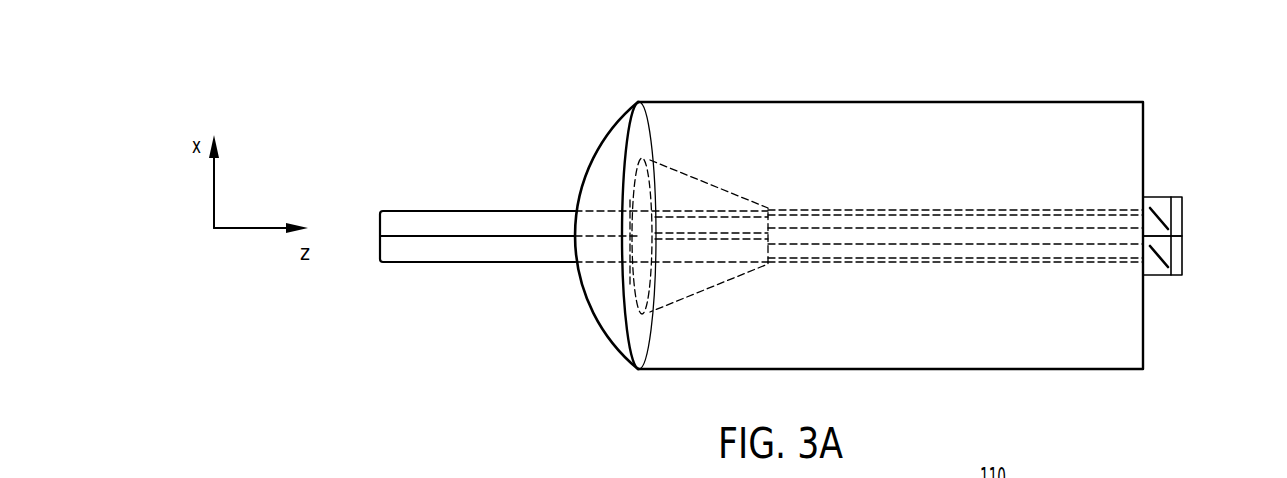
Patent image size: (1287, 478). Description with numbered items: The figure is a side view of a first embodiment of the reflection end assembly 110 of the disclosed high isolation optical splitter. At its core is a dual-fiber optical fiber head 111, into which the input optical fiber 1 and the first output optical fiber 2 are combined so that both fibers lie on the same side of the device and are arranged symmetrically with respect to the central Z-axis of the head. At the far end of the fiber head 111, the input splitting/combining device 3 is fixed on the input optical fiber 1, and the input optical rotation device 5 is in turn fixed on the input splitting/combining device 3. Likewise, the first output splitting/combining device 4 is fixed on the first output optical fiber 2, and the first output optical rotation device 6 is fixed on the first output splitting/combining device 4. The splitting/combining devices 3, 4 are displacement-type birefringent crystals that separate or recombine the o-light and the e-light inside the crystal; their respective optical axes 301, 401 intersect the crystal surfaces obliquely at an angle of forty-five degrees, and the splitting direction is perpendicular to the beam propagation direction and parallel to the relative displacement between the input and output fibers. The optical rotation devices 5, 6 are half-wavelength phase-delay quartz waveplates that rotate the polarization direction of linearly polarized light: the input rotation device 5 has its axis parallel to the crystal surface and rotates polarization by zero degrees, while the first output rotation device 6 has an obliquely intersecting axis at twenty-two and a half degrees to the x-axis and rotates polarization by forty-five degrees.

The reflection end assembly 110 is at (527, 113).
The dual-fiber optical fiber head 111 is at (862, 102).
The input optical fiber 1 is at (487, 248).
The first output optical fiber 2 is at (452, 227).
The input splitting/combining device 3 is at (1155, 275).
The first output splitting/combining device 4 is at (1157, 197).
The input optical rotation device 5 is at (1175, 275).
The first output optical rotation device 6 is at (1175, 197).
The optical axis 301 is at (1162, 256).
The optical axis 401 is at (1162, 217).